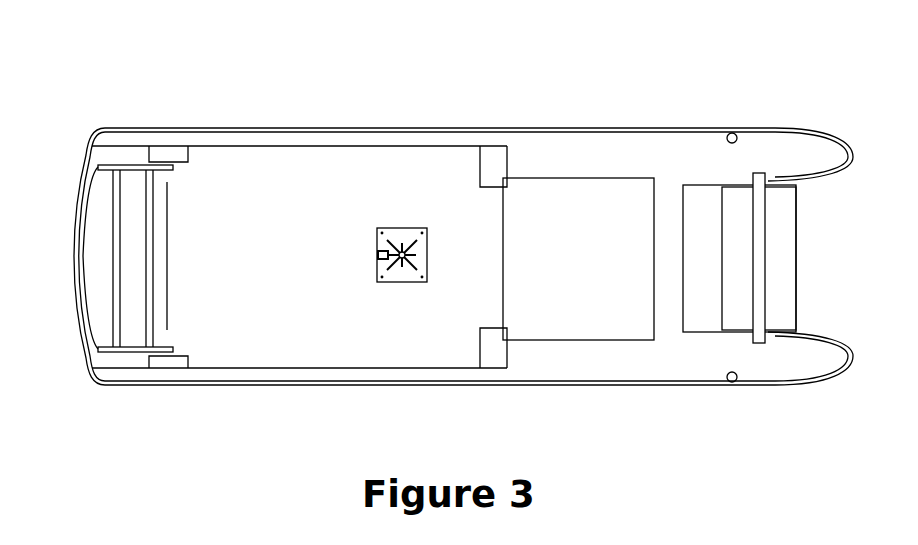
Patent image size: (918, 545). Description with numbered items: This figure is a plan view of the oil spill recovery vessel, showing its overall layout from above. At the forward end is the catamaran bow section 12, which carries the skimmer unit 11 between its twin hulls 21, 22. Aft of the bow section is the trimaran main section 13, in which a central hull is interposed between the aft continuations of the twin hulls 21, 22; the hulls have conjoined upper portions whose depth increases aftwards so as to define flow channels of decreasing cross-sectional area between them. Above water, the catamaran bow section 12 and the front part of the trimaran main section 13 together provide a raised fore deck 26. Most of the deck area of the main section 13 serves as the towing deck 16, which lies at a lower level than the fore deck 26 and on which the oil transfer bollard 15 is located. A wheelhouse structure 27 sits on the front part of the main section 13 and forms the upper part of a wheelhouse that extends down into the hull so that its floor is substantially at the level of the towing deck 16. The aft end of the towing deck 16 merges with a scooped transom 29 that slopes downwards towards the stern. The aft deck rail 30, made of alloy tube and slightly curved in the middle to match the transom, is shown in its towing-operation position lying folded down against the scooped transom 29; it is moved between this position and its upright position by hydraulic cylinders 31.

The skimmer unit 11 is at (790, 252).
The catamaran bow section 12 is at (687, 115).
The trimaran main section 13 is at (85, 115).
The oil transfer bollard 15 is at (383, 253).
The towing deck 16 is at (214, 271).
The twin hull 21 is at (802, 164).
The twin hull 22 is at (810, 352).
The fore deck 26 is at (657, 271).
The wheelhouse structure 27 is at (562, 271).
The scooped transom 29 is at (93, 238).
The aft deck rail 30 is at (113, 288).
The hydraulic cylinder 31 is at (180, 153).